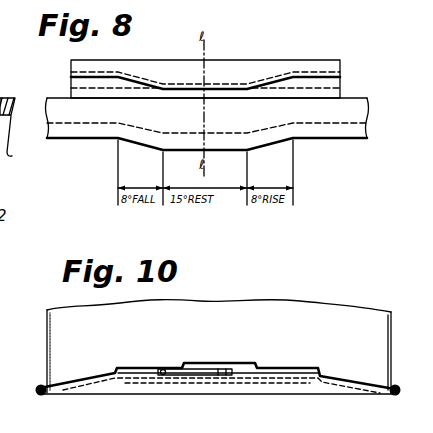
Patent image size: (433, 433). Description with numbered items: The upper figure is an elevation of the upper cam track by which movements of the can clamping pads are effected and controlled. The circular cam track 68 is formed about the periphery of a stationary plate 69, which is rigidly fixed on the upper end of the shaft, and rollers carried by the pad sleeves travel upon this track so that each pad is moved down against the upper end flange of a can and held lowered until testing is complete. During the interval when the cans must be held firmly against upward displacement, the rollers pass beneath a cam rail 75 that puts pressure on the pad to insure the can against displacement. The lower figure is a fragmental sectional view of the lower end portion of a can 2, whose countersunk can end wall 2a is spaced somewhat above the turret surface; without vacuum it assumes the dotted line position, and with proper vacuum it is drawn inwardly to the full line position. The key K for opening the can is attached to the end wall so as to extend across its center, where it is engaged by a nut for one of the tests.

In FIG. 8, the cam rail 75 is at (233, 90).
In FIG. 8, the cam track 68 is at (333, 121).
In FIG. 8, the stationary plate 69 is at (330, 137).
In FIG. 10, the can 2 is at (46, 336).
In FIG. 10, the can end wall 2a is at (132, 368).
In FIG. 10, the key K is at (194, 371).